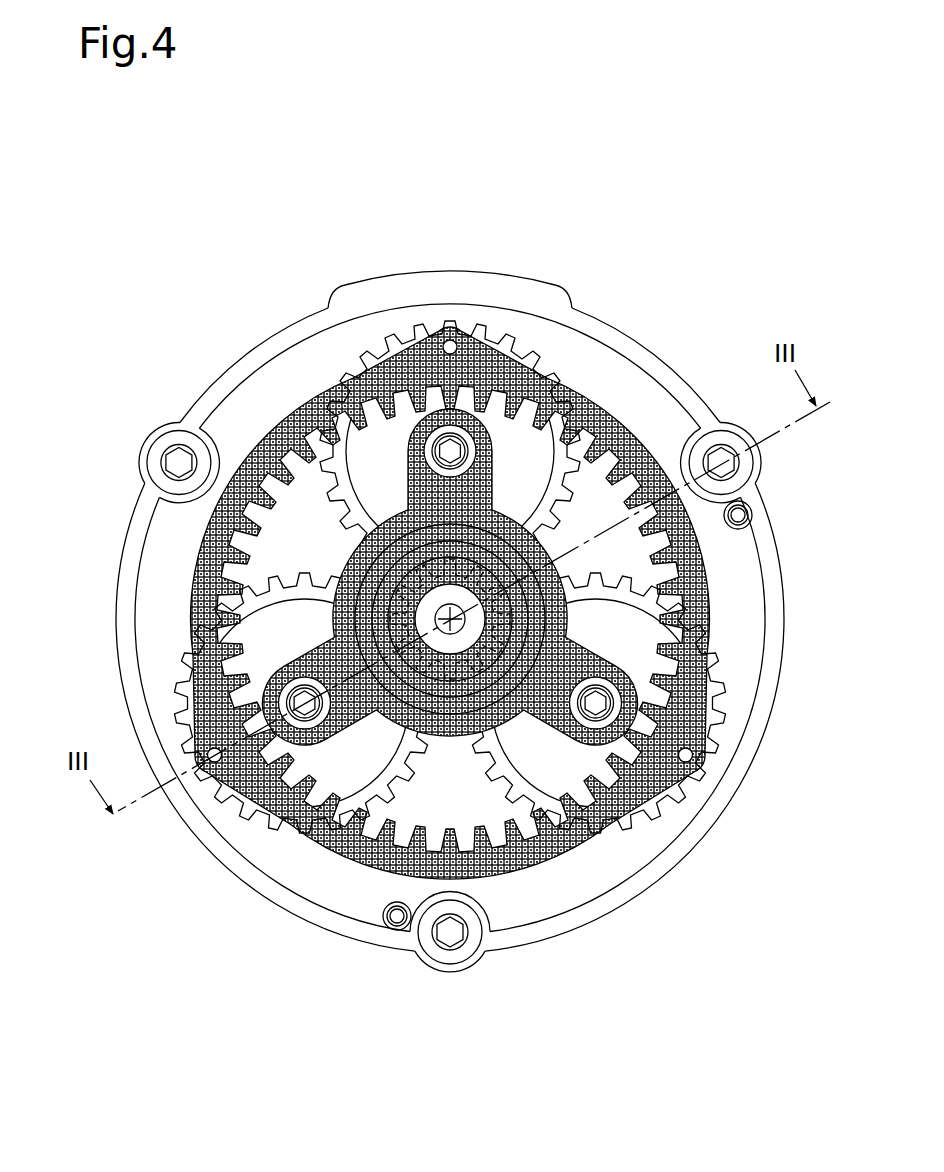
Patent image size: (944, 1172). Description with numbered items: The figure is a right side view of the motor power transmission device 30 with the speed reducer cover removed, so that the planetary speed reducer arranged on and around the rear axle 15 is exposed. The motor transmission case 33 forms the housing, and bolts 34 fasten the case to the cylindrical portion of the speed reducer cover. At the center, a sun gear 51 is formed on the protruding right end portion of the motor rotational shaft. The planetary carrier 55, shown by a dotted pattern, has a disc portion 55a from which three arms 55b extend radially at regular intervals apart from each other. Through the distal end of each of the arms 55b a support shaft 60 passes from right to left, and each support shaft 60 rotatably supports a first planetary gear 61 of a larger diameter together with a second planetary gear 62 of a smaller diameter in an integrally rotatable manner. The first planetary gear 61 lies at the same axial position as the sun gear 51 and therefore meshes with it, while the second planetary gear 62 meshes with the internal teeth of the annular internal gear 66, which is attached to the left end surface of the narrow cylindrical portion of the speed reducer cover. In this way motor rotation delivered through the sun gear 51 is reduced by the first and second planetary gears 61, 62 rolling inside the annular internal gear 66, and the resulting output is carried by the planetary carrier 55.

The rear axle 15 is at (464, 607).
The motor power transmission device 30 is at (396, 250).
The motor transmission case 33 is at (290, 325).
The bolts 34 is at (175, 462).
The sun gear 51 is at (450, 634).
The planetary carrier 55 is at (328, 559).
The disc portion 55a is at (462, 738).
The arms 55b is at (340, 506).
The support shaft 60 is at (455, 450).
The first planetary gear 61 is at (520, 340).
The second planetary gear 62 is at (630, 441).
The annular internal gear 66 is at (265, 425).